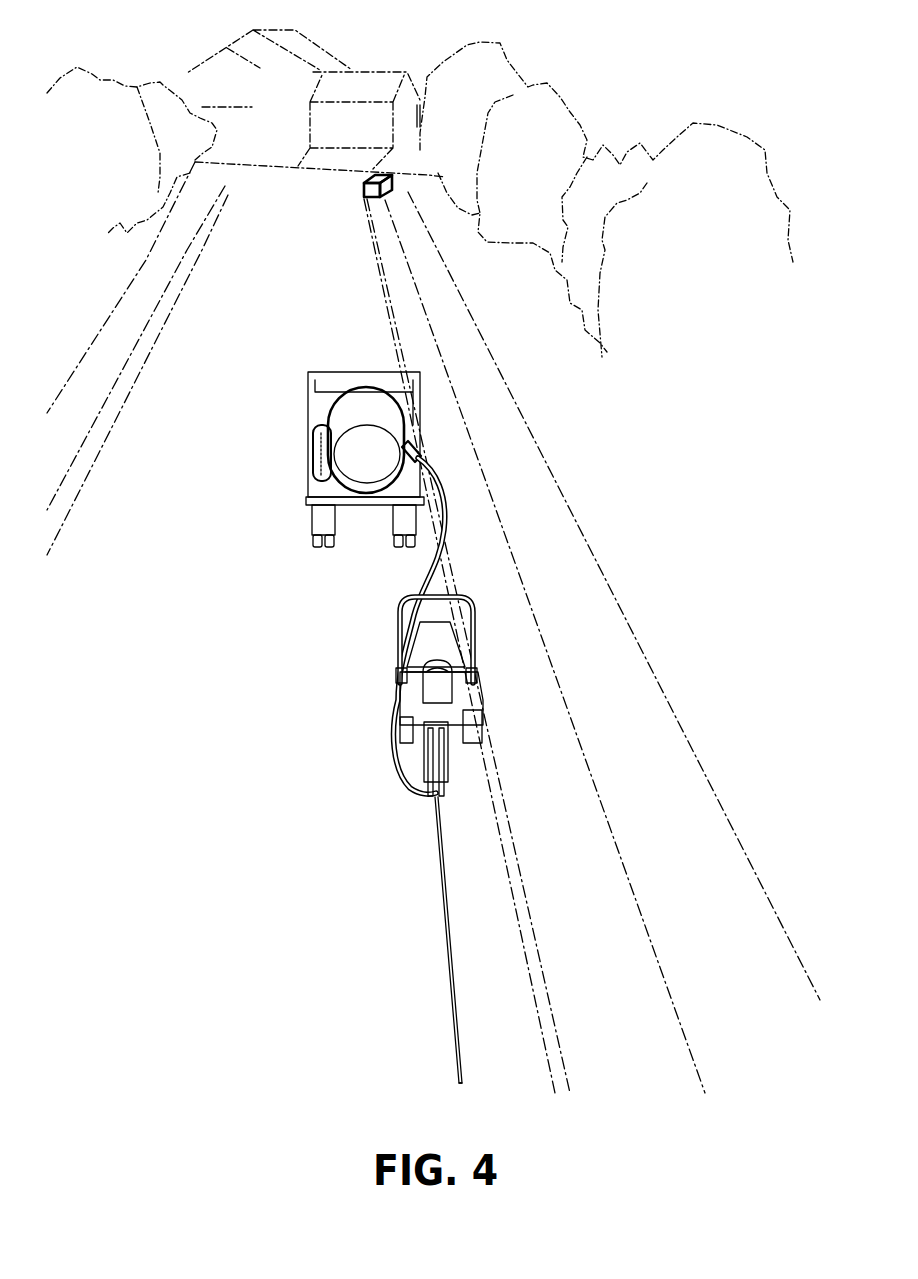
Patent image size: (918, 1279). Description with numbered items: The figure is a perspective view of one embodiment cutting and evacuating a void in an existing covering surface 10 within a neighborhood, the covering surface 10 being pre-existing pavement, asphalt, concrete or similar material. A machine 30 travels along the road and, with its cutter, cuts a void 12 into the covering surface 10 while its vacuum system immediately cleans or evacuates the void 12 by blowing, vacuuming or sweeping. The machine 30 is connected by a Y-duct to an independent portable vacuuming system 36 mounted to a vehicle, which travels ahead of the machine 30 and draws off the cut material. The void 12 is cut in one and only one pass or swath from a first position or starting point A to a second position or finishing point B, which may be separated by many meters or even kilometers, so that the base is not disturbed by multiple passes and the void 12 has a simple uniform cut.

The existing covering surface 10 is at (181, 602).
The void 12 is at (441, 872).
The machine 30 is at (362, 690).
The independent portable vacuuming system 36 is at (286, 440).
The starting point A is at (458, 1083).
The finishing point B is at (355, 211).